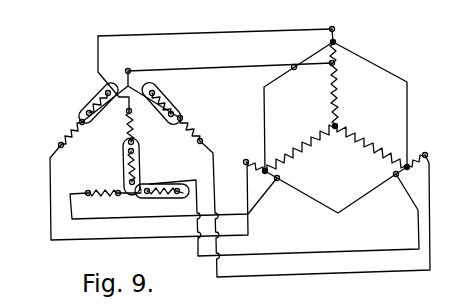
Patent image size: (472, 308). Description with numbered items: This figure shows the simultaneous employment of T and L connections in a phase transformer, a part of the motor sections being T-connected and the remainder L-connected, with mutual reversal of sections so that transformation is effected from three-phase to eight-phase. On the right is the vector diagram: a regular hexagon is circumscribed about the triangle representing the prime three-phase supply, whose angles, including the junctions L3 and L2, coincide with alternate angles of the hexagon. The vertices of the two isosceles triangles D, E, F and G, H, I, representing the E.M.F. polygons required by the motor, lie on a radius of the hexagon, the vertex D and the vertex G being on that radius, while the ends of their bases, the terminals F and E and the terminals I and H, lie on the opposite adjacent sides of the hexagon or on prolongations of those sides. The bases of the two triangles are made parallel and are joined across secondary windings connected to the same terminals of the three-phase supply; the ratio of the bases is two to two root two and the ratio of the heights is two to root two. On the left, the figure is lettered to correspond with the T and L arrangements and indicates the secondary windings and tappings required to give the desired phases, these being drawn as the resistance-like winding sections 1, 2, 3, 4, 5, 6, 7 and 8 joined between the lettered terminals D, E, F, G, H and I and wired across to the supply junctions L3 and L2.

The resistance coil 1 is at (136, 128).
The shunted resistance coil 2 is at (98, 102).
The shunted resistance coil 3 is at (162, 181).
The resistance coil 4 is at (190, 126).
The shunted resistance coil 5 is at (138, 166).
The resistance coil 6 is at (73, 129).
The resistance coil 7 is at (104, 182).
The shunted resistance coil 8 is at (161, 102).
The terminal G is at (233, 65).
The terminal D is at (225, 65).
The terminal I is at (146, 149).
The terminal H is at (321, 144).
The terminal F is at (185, 179).
The terminal E is at (288, 189).
The prime three-phase supply terminal L3 is at (258, 187).
The prime three-phase supply terminal L2 is at (417, 182).